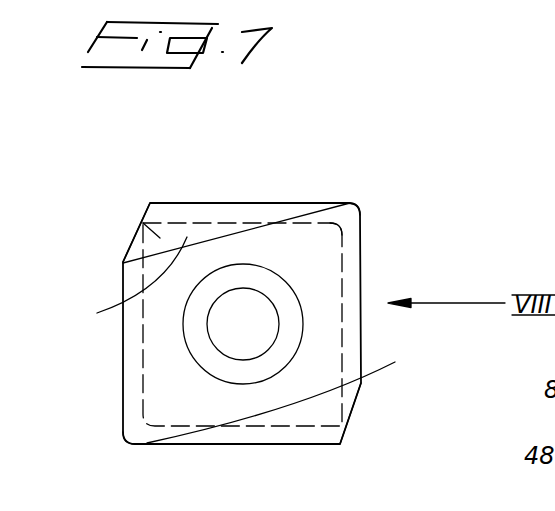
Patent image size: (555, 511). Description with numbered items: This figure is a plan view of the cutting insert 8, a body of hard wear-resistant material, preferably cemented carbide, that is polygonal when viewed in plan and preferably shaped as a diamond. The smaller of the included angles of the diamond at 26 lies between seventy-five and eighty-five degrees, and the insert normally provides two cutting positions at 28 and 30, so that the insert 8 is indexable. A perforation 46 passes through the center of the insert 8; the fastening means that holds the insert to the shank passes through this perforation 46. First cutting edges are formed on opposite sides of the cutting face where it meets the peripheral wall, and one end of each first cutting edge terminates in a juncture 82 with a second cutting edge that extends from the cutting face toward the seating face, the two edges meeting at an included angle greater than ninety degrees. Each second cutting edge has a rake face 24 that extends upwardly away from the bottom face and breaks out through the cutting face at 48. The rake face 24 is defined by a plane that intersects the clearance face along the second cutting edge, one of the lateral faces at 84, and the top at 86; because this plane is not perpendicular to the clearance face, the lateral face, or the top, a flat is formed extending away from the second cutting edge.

The insert 8 is at (205, 402).
The rake face 24 is at (160, 238).
The included angle 26 is at (172, 426).
The cutting position 28 is at (150, 201).
The cutting position 30 is at (340, 444).
The perforation 46 is at (248, 336).
The break-out of rake face 48 is at (345, 203).
The juncture 82 is at (123, 263).
The intersection of rake face plane with lateral face 84 is at (193, 202).
The intersection of rake face plane with top 86 is at (120, 285).